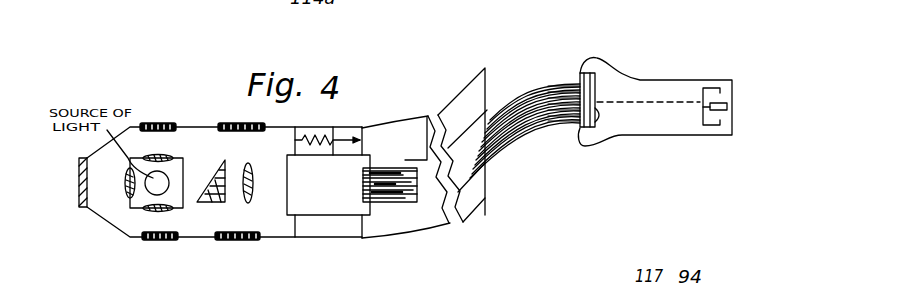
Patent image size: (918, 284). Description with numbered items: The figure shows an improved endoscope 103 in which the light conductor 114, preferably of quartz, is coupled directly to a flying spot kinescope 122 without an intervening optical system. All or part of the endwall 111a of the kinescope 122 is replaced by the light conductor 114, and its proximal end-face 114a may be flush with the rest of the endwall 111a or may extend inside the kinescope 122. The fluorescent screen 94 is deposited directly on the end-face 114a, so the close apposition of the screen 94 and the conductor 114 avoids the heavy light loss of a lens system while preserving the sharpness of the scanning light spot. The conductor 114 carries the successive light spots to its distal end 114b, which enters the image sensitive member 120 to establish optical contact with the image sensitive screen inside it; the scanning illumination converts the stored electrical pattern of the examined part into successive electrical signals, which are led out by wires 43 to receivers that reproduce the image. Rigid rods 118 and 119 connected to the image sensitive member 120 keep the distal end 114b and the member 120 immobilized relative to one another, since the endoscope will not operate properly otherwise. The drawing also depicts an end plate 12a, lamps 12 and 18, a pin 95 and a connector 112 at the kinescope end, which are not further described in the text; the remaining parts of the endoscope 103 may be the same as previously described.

The end plate 12a is at (78, 177).
The lamp 12 is at (157, 123).
The lamp 18 is at (240, 123).
The rigid rod 119 is at (293, 232).
The rigid rod 118 is at (297, 138).
The image sensitive member 120 is at (328, 210).
The distal end 114b is at (363, 170).
The endoscope 103 is at (415, 111).
The light conductor 114 is at (390, 202).
The proximal end-face 114a is at (581, 128).
The endwall 111a is at (582, 73).
The fluorescent screen 94 is at (579, 80).
The flying spot kinescope 122 is at (606, 67).
The pin 95 is at (599, 118).
The connector 112 is at (675, 105).
The wires 43 is at (548, 32).